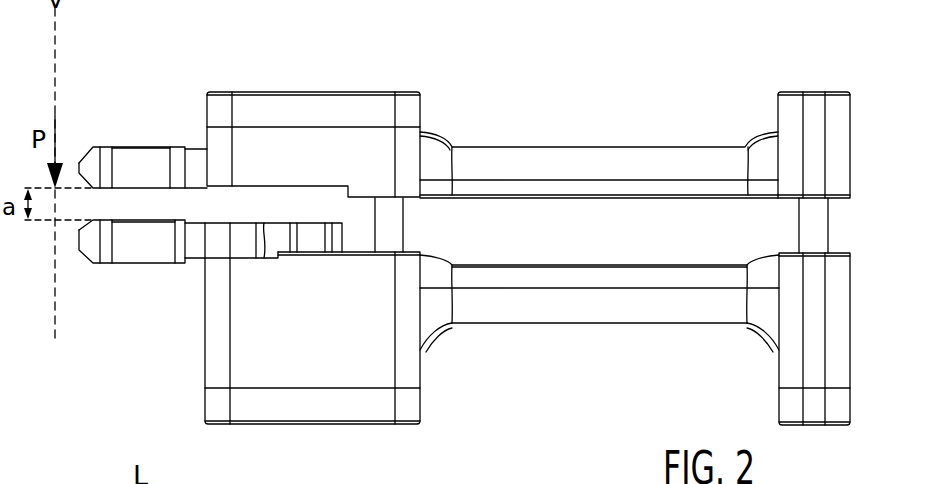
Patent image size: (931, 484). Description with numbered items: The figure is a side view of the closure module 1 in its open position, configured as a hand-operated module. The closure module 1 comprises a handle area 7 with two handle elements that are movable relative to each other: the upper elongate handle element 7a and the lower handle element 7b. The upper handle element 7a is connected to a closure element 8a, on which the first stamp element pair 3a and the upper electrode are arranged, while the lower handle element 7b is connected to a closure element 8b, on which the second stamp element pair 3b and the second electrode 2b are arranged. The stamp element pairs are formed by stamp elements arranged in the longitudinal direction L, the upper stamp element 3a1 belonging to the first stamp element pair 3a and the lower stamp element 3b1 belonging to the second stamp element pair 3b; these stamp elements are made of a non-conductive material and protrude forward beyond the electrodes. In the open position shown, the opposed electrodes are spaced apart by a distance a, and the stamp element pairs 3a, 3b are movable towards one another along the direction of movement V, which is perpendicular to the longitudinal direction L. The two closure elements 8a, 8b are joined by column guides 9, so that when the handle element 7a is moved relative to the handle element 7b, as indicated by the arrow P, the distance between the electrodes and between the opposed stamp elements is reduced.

The closure module 1 is at (512, 73).
The second electrode 2b is at (282, 237).
The first stamp element pair 3a is at (90, 133).
The upper stamp element 3a1 is at (133, 152).
The second stamp element pair 3b is at (95, 289).
The lower stamp element 3b1 is at (145, 250).
The handle area 7 is at (665, 128).
The upper handle element 7a is at (542, 168).
The lower handle element 7b is at (650, 320).
The first closure element 8a is at (305, 108).
The second closure element 8b is at (358, 403).
The column guides 9 is at (392, 223).